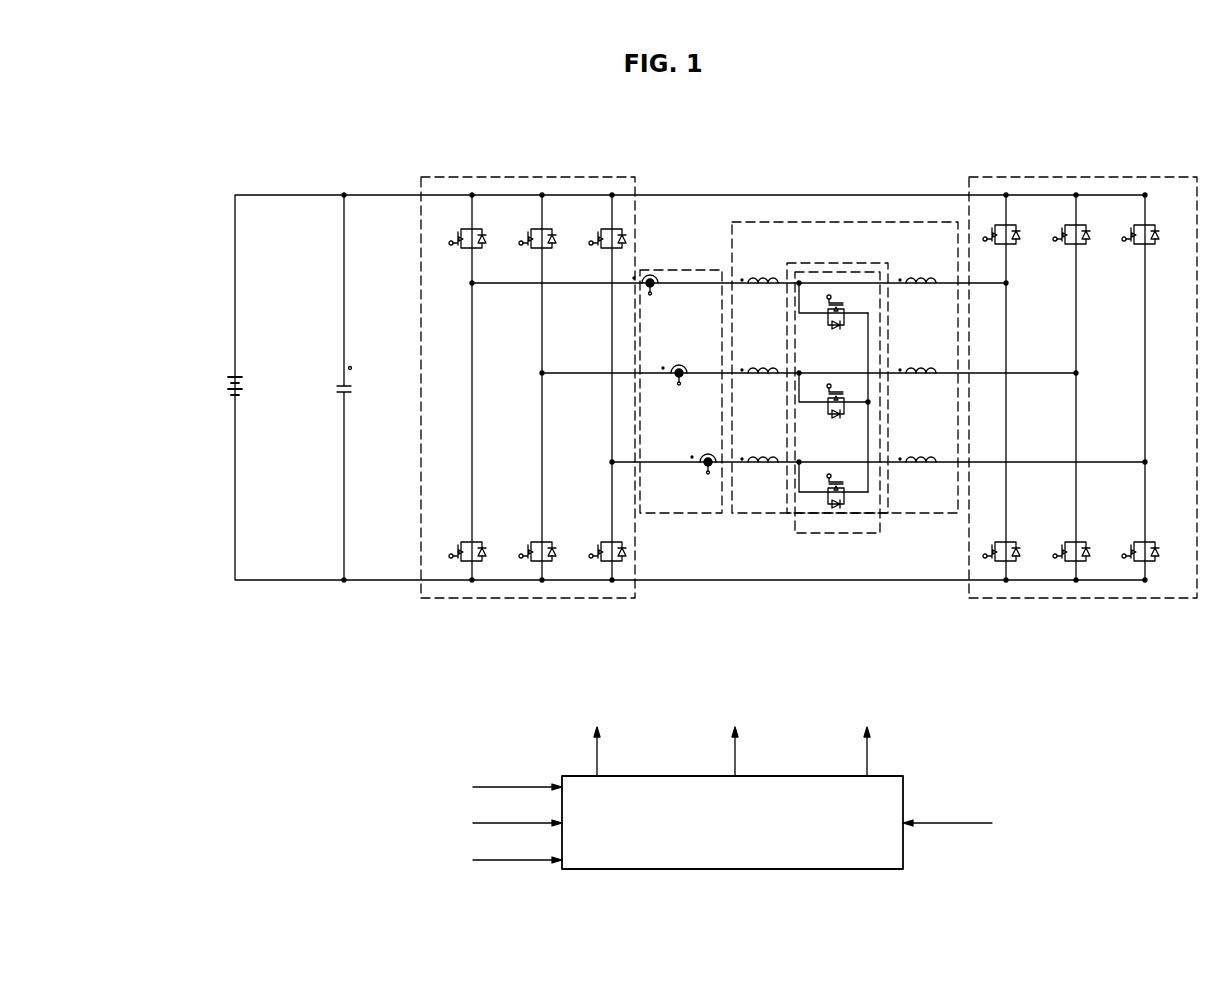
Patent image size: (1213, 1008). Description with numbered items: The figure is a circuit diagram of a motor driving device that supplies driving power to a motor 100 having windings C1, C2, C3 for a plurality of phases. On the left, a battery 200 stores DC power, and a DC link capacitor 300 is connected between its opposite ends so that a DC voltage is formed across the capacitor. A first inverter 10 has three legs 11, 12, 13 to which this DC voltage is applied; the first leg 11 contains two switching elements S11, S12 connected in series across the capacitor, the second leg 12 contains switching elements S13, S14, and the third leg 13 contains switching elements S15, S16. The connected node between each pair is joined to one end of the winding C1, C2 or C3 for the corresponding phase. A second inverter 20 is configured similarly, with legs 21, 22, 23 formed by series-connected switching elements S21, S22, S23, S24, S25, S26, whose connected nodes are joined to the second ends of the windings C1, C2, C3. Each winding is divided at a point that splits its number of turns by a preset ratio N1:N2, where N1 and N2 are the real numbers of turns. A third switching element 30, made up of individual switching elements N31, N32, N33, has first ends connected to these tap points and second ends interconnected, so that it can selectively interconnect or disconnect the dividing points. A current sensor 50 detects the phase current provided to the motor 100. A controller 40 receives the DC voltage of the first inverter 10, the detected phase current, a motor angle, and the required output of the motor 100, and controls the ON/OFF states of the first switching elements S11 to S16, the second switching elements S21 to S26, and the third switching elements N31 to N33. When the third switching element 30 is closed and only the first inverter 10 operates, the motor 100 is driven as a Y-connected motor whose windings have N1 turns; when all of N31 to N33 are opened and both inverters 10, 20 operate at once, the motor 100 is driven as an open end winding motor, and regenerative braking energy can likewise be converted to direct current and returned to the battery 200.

The first inverter 10 is at (520, 177).
The second inverter 20 is at (1076, 177).
The third switching element 30 is at (837, 467).
The controller 40 is at (903, 776).
The current sensor 50 is at (688, 270).
The motor 100 is at (843, 222).
The battery 200 is at (229, 378).
The DC link capacitor 300 is at (341, 387).
The first leg 11 is at (480, 429).
The second leg 12 is at (550, 429).
The third leg 13 is at (620, 429).
The first leg 21 is at (1014, 429).
The second leg 22 is at (1084, 429).
The third leg 23 is at (1152, 429).
The switching element S11 is at (480, 250).
The switching element S12 is at (480, 538).
The switching element S13 is at (550, 250).
The switching element S14 is at (550, 538).
The switching element S15 is at (620, 250).
The switching element S16 is at (620, 538).
The switching element S21 is at (1015, 248).
The switching element S22 is at (1015, 538).
The switching element S23 is at (1085, 248).
The switching element S24 is at (1085, 538).
The switching element S25 is at (1154, 248).
The switching element S26 is at (1154, 538).
The number of turns N1 is at (759, 384).
The number of turns N2 is at (917, 384).
The third switching element N31 is at (832, 317).
The third switching element N32 is at (832, 407).
The third switching element N33 is at (832, 495).
The winding C1 is at (775, 280).
The winding C2 is at (772, 366).
The winding C3 is at (748, 468).